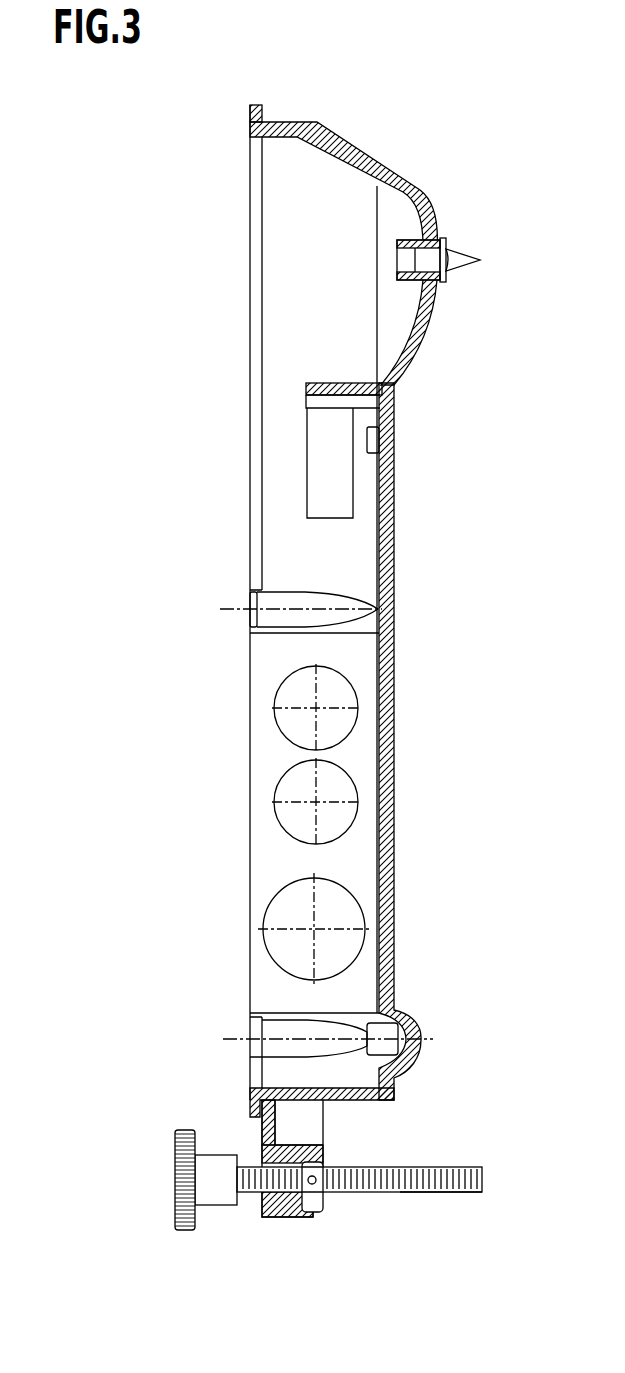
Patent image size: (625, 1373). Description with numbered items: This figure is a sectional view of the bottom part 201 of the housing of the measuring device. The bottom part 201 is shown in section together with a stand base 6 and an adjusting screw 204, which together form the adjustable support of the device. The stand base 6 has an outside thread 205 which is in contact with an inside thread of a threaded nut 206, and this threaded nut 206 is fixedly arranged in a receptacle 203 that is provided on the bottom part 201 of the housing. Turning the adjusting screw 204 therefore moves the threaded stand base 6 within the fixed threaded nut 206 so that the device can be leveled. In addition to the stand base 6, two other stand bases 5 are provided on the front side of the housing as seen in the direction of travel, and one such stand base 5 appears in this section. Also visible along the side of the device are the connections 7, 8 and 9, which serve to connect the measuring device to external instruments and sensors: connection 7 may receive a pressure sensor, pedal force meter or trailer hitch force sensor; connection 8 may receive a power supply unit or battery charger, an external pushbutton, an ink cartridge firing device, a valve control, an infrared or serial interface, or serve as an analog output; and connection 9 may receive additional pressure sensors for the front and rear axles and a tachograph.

The housing bottom part 201 is at (360, 143).
The stand base 5 is at (453, 258).
The connection 7 is at (297, 690).
The connection 8 is at (288, 797).
The connection 9 is at (290, 943).
The stand base 6 is at (477, 1167).
The receptacle 203 is at (283, 1207).
The adjusting screw 204 is at (183, 1207).
The outside thread 205 is at (430, 1190).
The threaded nut 206 is at (315, 1217).